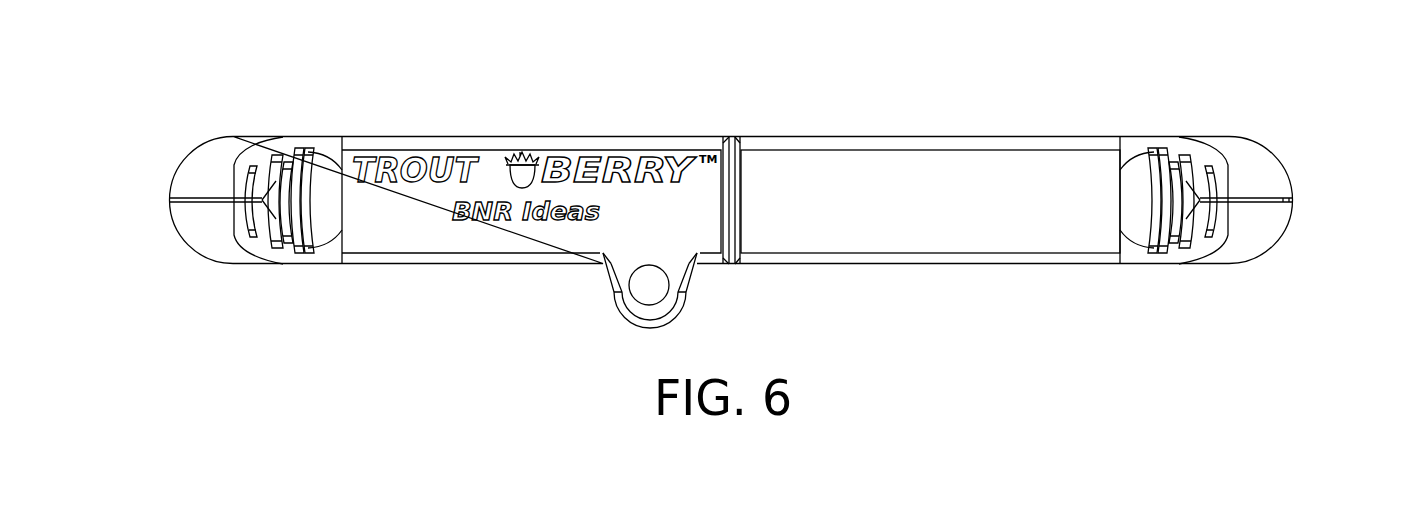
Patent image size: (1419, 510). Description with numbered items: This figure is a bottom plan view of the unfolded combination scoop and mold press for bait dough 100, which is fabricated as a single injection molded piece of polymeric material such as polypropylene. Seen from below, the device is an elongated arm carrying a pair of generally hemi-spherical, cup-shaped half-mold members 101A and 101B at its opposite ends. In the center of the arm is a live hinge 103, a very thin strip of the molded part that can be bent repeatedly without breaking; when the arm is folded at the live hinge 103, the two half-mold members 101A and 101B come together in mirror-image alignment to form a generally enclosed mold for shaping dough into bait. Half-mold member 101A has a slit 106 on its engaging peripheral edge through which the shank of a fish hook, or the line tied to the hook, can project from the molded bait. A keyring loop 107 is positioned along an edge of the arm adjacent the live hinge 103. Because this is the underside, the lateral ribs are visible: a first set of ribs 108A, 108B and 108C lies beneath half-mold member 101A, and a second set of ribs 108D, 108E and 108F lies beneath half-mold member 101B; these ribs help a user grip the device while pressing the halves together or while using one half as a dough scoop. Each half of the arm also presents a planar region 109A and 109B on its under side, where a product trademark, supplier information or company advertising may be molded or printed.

The CSMP for bait dough 100 is at (372, 81).
The half-mold member 101A is at (1253, 166).
The half-mold member 101B is at (200, 172).
The live hinge 103 is at (733, 127).
The slit 106 is at (1303, 195).
The keyring loop 107 is at (626, 312).
The lateral rib 108A is at (1211, 240).
The lateral rib 108B is at (1184, 246).
The lateral rib 108C is at (1155, 250).
The lateral rib 108D is at (302, 250).
The lateral rib 108E is at (277, 158).
The lateral rib 108F is at (252, 237).
The planar region 109A is at (408, 225).
The planar region 109B is at (947, 225).